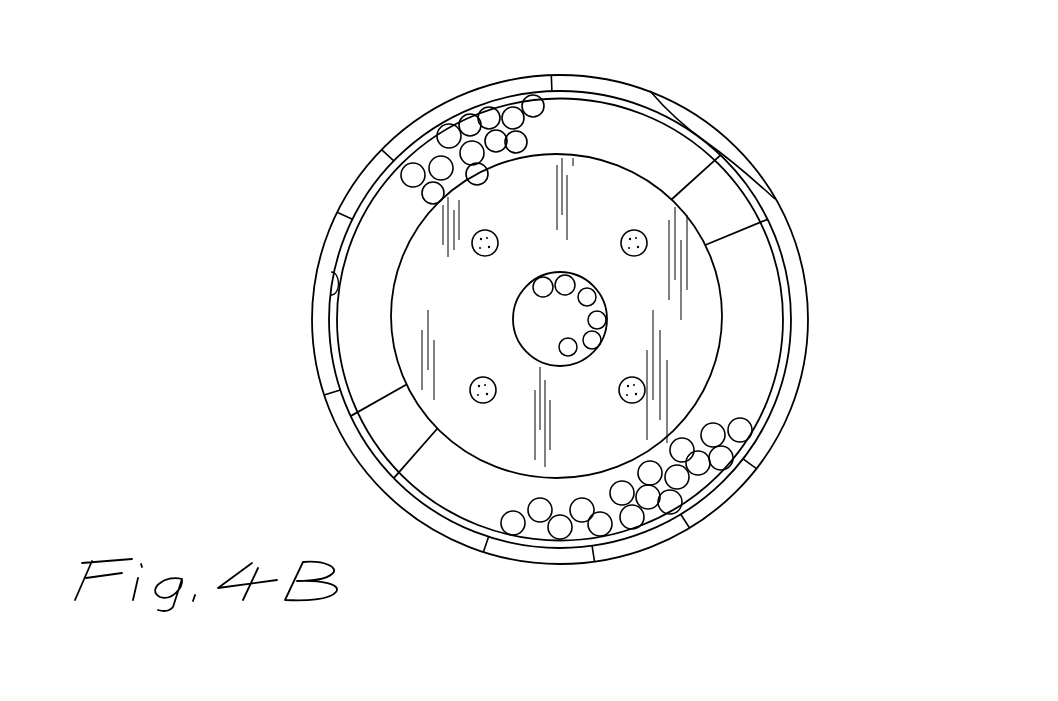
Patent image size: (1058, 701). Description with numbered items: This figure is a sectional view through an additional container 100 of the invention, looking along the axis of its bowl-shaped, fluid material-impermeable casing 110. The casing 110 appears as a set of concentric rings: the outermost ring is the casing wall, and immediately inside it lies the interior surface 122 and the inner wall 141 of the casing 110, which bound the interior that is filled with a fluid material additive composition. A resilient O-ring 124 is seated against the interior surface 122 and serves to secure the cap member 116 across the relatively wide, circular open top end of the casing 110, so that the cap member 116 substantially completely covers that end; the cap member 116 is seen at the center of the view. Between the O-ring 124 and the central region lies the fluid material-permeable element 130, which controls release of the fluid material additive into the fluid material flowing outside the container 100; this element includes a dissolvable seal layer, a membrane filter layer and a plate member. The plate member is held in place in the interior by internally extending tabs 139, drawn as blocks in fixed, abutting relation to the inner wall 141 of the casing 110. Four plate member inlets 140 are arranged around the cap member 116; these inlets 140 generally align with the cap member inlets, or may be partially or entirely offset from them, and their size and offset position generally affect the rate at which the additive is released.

The container 100 is at (299, 203).
The casing 110 is at (763, 170).
The cap member 116 is at (559, 334).
The interior surface 122 is at (790, 385).
The resilient O-ring 124 is at (697, 127).
The fluid material-permeable element 130 is at (478, 233).
The internally extending tabs 139 is at (715, 185).
The plate member inlets 140 is at (490, 231).
The inner wall 141 is at (328, 300).